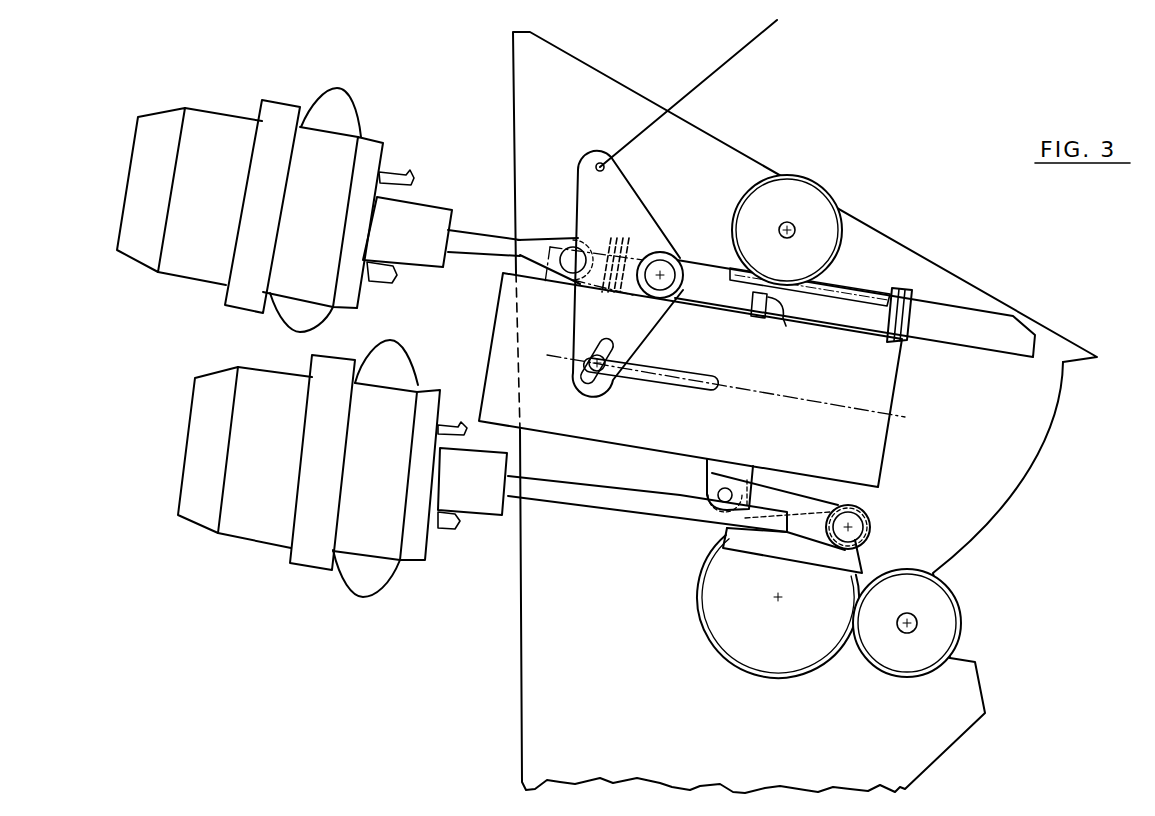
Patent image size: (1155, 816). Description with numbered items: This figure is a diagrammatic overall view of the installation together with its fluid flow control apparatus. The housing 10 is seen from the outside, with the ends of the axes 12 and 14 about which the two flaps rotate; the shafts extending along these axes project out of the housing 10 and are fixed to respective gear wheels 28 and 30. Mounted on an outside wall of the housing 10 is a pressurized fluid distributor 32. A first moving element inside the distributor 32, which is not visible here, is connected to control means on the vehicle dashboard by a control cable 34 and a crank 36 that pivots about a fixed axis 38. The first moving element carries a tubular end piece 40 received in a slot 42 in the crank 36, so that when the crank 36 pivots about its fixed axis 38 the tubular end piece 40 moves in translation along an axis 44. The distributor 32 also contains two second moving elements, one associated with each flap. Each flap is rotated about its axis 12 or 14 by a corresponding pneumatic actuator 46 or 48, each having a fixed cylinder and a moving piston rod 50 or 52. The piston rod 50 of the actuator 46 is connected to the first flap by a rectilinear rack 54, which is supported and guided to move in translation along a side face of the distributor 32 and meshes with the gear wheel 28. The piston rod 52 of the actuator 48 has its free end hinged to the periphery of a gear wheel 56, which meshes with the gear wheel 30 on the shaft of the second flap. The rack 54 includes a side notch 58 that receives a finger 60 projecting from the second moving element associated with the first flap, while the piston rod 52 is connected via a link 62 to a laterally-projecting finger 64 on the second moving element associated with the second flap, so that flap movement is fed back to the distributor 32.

The housing 10 is at (630, 84).
The axis 12 is at (787, 229).
The axis 14 is at (924, 602).
The gear wheel 28 is at (828, 194).
The gear wheel 30 is at (878, 667).
The pressurized fluid distributor 32 is at (892, 448).
The control cable 34 is at (740, 57).
The crank 36 is at (632, 203).
The fixed axis 38 is at (668, 270).
The tubular end piece 40 is at (592, 388).
The slot 42 is at (603, 343).
The axis 44 is at (820, 404).
The pneumatic actuator 46 is at (227, 104).
The pneumatic actuator 48 is at (181, 403).
The piston rod 50 is at (494, 236).
The piston rod 52 is at (620, 498).
The rectilinear rack 54 is at (857, 310).
The gear wheel 56 is at (697, 613).
The side notch 58 is at (777, 305).
The finger 60 is at (757, 318).
The link 62 is at (790, 498).
The laterally-projecting finger 64 is at (731, 463).